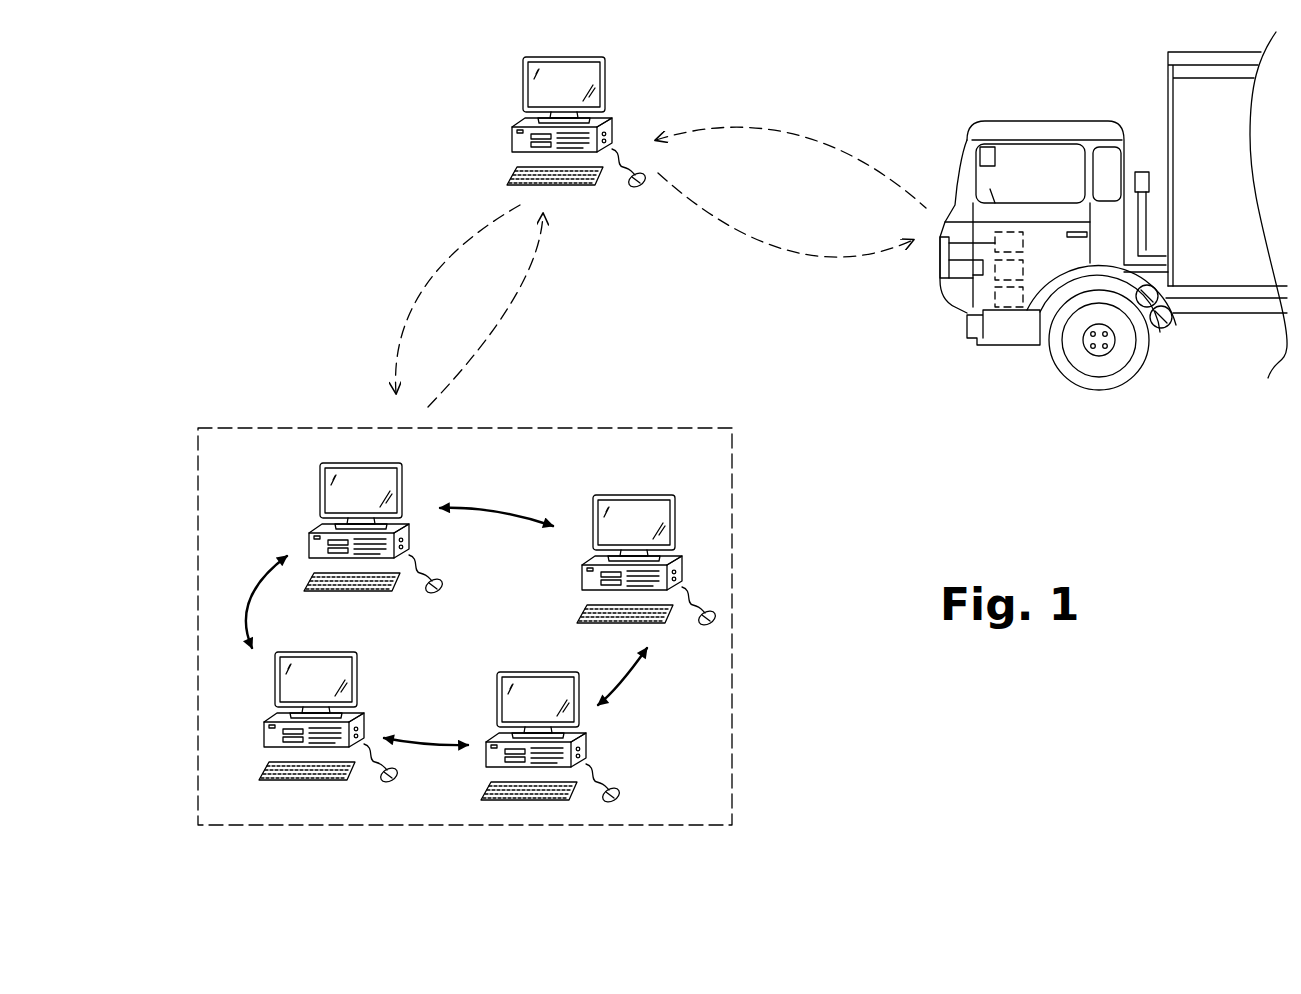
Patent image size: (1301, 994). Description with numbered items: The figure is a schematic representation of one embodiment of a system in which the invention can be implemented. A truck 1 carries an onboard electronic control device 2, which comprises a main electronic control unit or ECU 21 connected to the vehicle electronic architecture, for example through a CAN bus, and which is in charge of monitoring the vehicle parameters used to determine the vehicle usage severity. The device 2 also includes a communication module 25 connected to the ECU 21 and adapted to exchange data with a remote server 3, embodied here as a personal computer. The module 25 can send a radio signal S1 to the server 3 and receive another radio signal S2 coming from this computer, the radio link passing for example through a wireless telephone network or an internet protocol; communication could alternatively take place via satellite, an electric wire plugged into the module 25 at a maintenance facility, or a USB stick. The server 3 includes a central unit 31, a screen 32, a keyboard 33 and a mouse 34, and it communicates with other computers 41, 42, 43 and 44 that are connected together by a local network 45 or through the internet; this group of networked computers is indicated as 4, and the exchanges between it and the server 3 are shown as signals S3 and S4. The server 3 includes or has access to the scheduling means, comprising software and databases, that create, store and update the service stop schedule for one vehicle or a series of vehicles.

The truck 1 is at (1054, 85).
The onboard electronic control device 2 is at (1038, 413).
The main electronic control unit (ECU) 21 is at (1007, 298).
The communication module 25 is at (941, 280).
The remote server 3 is at (628, 80).
The central unit 31 is at (512, 134).
The screen 32 is at (560, 78).
The keyboard 33 is at (585, 186).
The mouse 34 is at (638, 189).
The network of user terminals 4 is at (568, 398).
The computer 41 is at (684, 522).
The computer 42 is at (312, 483).
The computer 43 is at (256, 737).
The computer 44 is at (477, 772).
The local network 45 is at (478, 507).
The radio signal S1 is at (785, 155).
The radio signal S2 is at (785, 226).
The signal from server to network S3 is at (436, 299).
The signal from network to server S4 is at (503, 310).